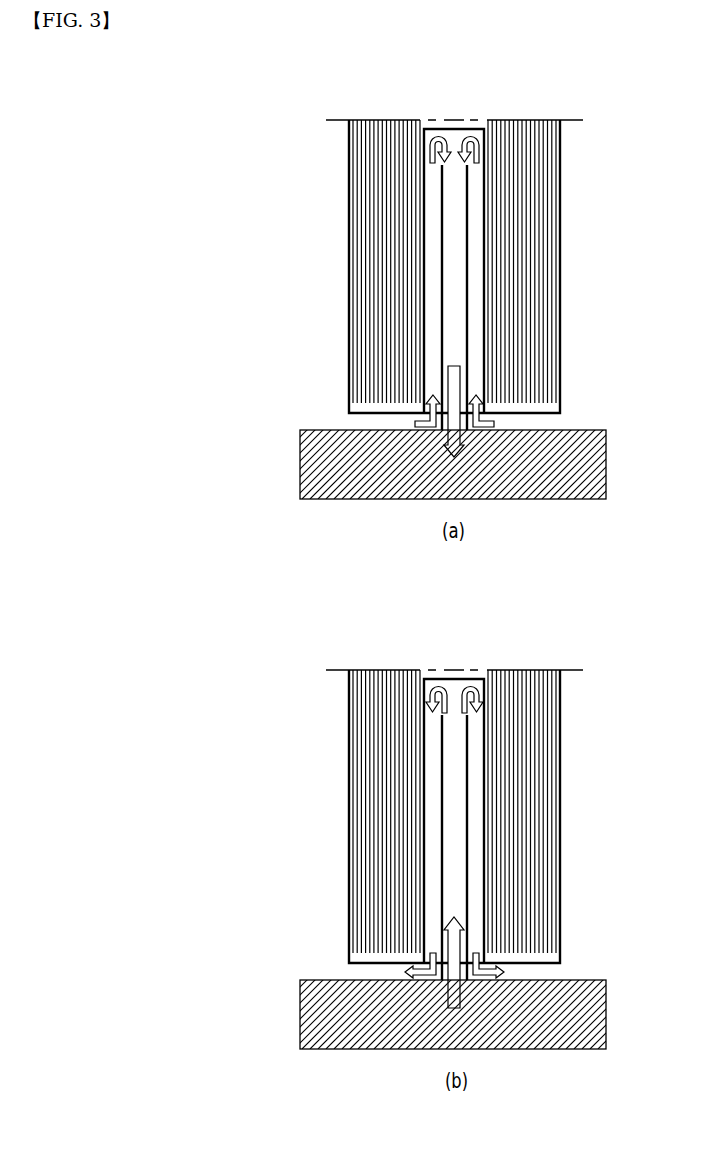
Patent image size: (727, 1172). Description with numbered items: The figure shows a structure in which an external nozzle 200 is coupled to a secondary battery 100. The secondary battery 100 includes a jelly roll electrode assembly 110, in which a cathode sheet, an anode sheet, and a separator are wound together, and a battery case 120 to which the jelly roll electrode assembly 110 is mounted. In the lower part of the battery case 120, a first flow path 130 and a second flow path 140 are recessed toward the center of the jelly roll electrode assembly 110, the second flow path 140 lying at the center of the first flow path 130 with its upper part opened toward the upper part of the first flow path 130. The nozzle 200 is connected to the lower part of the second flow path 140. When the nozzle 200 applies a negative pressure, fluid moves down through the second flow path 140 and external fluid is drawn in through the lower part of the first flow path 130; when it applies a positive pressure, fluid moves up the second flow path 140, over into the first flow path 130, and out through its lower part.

The secondary battery 100 is at (383, 88).
The jelly roll electrode assembly 110 is at (538, 242).
The battery case 120 is at (560, 290).
The first flow path 130 is at (477, 202).
The second flow path 140 is at (460, 340).
The nozzle 200 is at (472, 412).